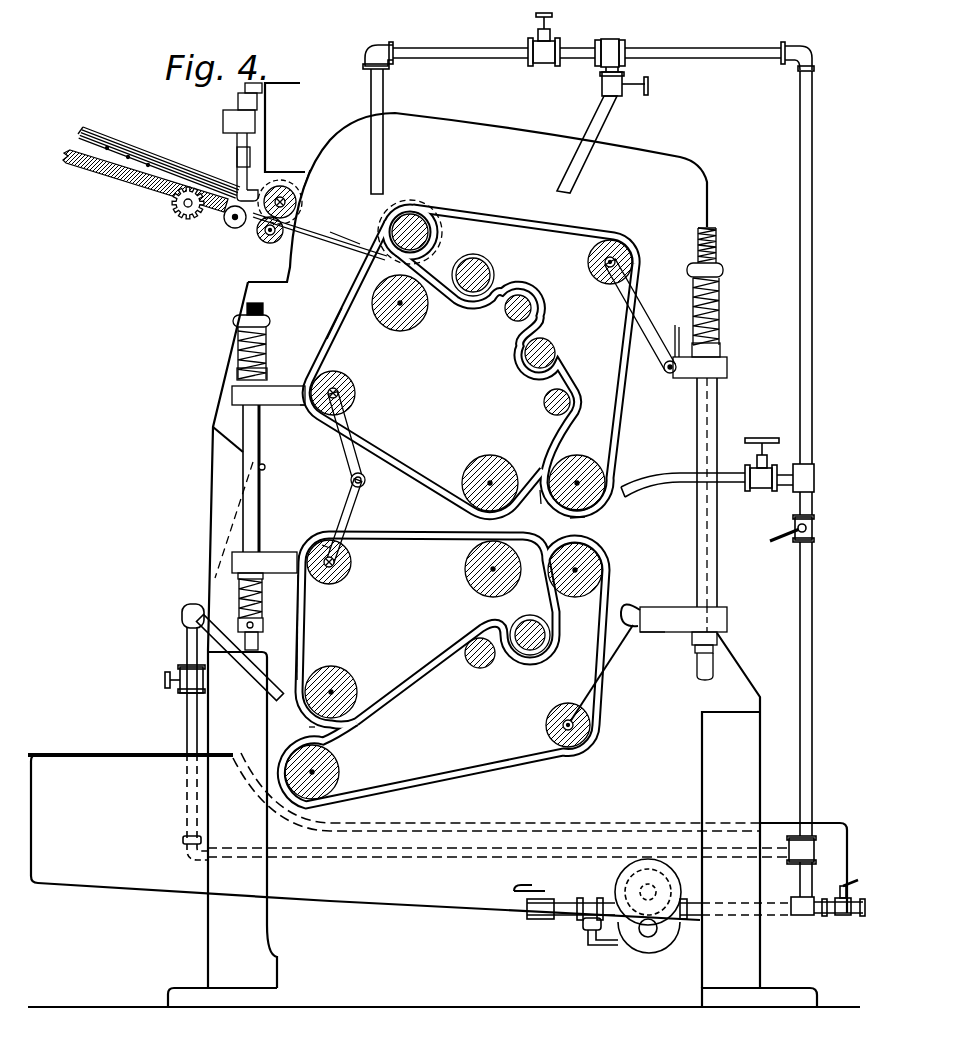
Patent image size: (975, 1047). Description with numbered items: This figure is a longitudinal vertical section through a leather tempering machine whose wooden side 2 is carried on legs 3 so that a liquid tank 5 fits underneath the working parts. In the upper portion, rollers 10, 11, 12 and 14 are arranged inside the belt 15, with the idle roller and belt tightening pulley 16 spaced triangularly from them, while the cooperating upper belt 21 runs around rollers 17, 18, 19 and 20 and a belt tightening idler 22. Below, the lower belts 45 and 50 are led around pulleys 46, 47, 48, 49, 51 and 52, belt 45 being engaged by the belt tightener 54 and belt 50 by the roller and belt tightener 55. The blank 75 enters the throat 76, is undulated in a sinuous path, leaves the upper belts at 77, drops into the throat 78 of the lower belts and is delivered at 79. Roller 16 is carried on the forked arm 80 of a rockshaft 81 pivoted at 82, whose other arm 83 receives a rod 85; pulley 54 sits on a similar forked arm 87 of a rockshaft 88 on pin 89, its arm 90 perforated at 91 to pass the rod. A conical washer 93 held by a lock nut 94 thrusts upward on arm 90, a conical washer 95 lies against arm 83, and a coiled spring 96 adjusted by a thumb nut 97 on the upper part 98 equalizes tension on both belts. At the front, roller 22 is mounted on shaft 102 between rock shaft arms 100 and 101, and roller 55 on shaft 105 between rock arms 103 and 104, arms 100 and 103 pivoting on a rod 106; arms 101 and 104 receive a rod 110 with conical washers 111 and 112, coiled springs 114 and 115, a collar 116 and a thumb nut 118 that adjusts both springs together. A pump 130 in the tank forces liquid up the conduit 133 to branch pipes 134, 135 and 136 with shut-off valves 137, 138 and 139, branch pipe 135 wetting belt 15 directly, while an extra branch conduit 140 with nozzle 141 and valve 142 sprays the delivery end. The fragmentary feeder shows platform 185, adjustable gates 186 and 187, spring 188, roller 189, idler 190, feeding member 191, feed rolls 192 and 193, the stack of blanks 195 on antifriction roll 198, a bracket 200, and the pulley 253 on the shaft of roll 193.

The side 2 is at (678, 188).
The legs 3 is at (208, 945).
The tank 5 is at (103, 872).
The roller 10 is at (420, 218).
The roller 11 is at (478, 262).
The roller 12 is at (552, 355).
The roller 14 is at (603, 478).
The belt 15 is at (585, 232).
The idle roller and belt tightening pulley 16 is at (612, 232).
The roller 17 is at (413, 325).
The roller 18 is at (512, 318).
The roller 19 is at (543, 404).
The roller 20 is at (478, 460).
The upper belt 21 is at (343, 328).
The belt tightening idler 22 is at (307, 410).
The belt 45 is at (511, 765).
The pulley 46 is at (608, 560).
The pulley 47 is at (476, 664).
The pulley 48 is at (350, 762).
The pulley 49 is at (470, 571).
The belt 50 is at (304, 608).
The pulley 51 is at (518, 627).
The pulley 52 is at (348, 672).
The belt tightener 54 is at (584, 752).
The roller and belt tightener 55 is at (323, 540).
The blank 75 is at (370, 182).
The throat 76 is at (370, 258).
The exit of upper belts 77 is at (539, 495).
The throat 78 is at (582, 517).
The delivery point 79 is at (305, 727).
The forked arm 80 is at (643, 303).
The rockshaft 81 is at (665, 375).
The pivot 82 is at (676, 325).
The arm 83 is at (727, 362).
The rod 85 is at (718, 398).
The forked arm 87 is at (606, 668).
The rockshaft 88 is at (647, 607).
The pin 89 is at (628, 601).
The arm 90 is at (665, 633).
The perforation 91 is at (712, 607).
The conical washer 93 is at (718, 638).
The lock nut 94 is at (714, 650).
The conical washer 95 is at (718, 345).
The coiled spring 96 is at (721, 298).
The thumb nut 97 is at (722, 268).
The upper part of rod 98 is at (712, 230).
The rock shaft arm 100 is at (343, 422).
The rock shaft arm 101 is at (283, 387).
The shaft 102 is at (348, 384).
The rock arm 103 is at (350, 520).
The rock arm 104 is at (277, 560).
The shaft 105 is at (352, 568).
The rod 106 is at (365, 480).
The rod 110 is at (243, 428).
The conical washer 111 is at (237, 375).
The conical washer 112 is at (238, 574).
The coiled spring 114 is at (236, 349).
The coiled spring 115 is at (238, 597).
The collar 116 is at (258, 627).
The thumb nut 118 is at (233, 320).
The pump 130 is at (625, 928).
The conduit 133 is at (805, 690).
The branch pipe 134 is at (685, 478).
The branch pipe 135 is at (592, 127).
The branch pipe 136 is at (370, 93).
The shut-off valve 137 is at (778, 437).
The shut-off valve 138 is at (556, 16).
The shut-off valve 139 is at (770, 538).
The branch conduit 140 is at (187, 725).
The nozzle 141 is at (215, 638).
The valve 142 is at (163, 680).
The platform 185 is at (138, 185).
The adjustable gate 186 is at (237, 157).
The adjustable gate 187 is at (259, 137).
The spring 188 is at (224, 108).
The roller 189 is at (268, 184).
The idler 190 is at (233, 220).
The feeding member 191 is at (183, 210).
The feed roll 192 is at (306, 186).
The feed roll 193 is at (267, 236).
The stack of blanks 195 is at (118, 128).
The antifriction roll 198 is at (110, 148).
The bracket 200 is at (258, 111).
The pulley 253 is at (390, 197).